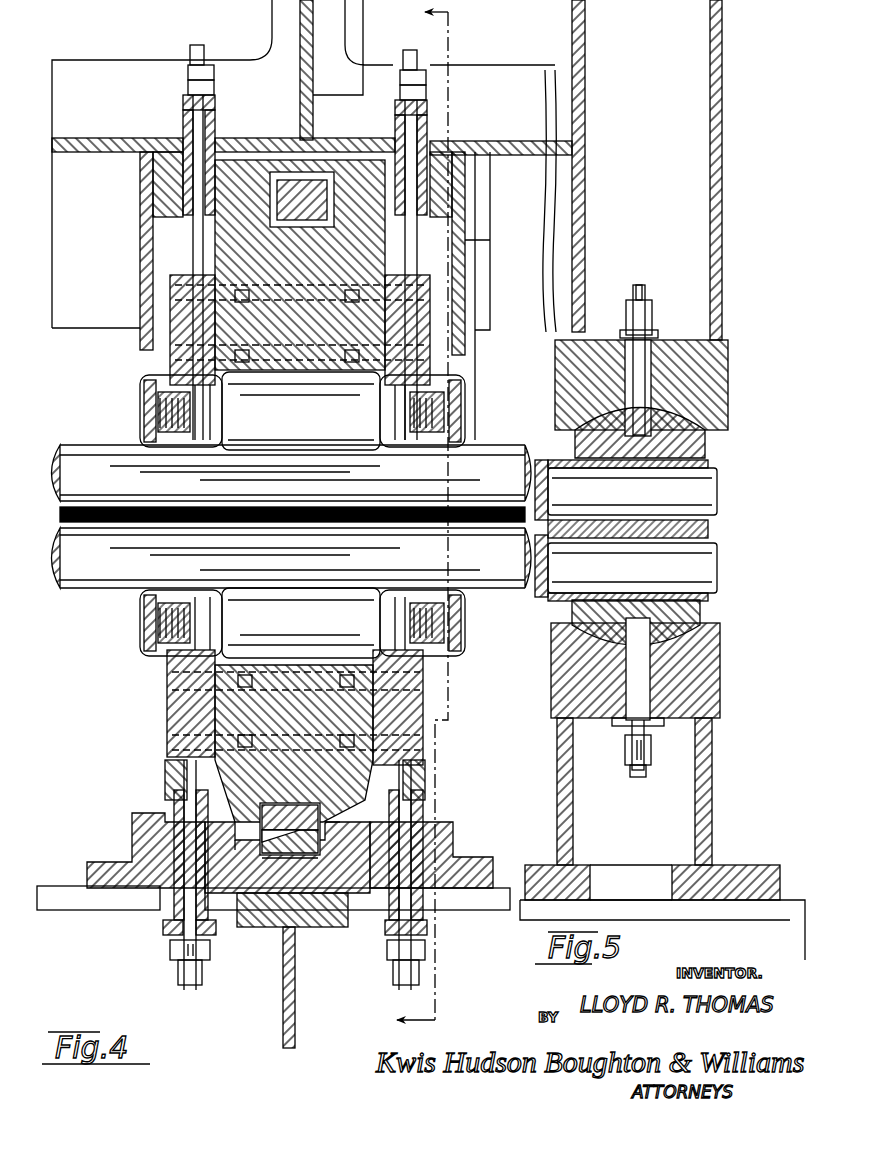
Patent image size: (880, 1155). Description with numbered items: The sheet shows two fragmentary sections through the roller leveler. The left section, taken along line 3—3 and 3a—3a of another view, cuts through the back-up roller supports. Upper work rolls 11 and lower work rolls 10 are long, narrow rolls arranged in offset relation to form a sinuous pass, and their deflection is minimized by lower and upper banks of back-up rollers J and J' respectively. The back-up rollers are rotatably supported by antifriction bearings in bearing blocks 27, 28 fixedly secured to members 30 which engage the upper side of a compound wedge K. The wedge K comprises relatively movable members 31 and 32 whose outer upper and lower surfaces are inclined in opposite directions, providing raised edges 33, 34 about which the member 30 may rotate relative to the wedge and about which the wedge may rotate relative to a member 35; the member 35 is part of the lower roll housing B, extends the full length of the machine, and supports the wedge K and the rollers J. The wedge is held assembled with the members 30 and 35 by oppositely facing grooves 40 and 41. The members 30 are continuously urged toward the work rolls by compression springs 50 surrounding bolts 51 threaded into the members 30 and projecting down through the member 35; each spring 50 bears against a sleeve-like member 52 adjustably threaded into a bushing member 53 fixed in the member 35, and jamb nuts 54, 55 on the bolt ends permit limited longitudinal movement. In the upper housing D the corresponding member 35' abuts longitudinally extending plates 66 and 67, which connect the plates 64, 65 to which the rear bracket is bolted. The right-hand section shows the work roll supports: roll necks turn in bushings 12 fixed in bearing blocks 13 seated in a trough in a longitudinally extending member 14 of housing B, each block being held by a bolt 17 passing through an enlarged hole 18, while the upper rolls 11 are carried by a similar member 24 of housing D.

In FIG. 4, the upper roll housing D is at (123, 72).
In FIG. 5, the upper roll housing D is at (720, 192).
In FIG. 4, the plate 64 is at (72, 315).
In FIG. 4, the member 35' is at (312, 130).
In FIG. 4, the longitudinally extending plate 66 is at (143, 245).
In FIG. 4, the longitudinally extending plate 67 is at (470, 252).
In FIG. 4, the plate 65 is at (498, 328).
In FIG. 4, the upper bank of back-up rollers J' is at (301, 430).
In FIG. 4, the lower bank of back-up rollers J is at (301, 600).
In FIG. 4, the upper work rolls 11 is at (93, 452).
In FIG. 5, the upper work rolls 11 is at (715, 492).
In FIG. 4, the lower work rolls 10 is at (95, 572).
In FIG. 5, the lower work rolls 10 is at (715, 560).
In FIG. 4, the bearing block 27 is at (165, 707).
In FIG. 4, the bearing block 28 is at (420, 712).
In FIG. 4, the member 30 is at (300, 746).
In FIG. 4, the compound wedge K is at (287, 857).
In FIG. 4, the raised edge 33 is at (282, 804).
In FIG. 4, the upper wedge member 31 is at (300, 812).
In FIG. 4, the groove 41 is at (325, 842).
In FIG. 4, the groove 40 is at (330, 806).
In FIG. 4, the raised edge 34 is at (290, 871).
In FIG. 4, the lower wedge member 32 is at (308, 852).
In FIG. 4, the member 35 is at (290, 850).
In FIG. 4, the bushing member 53 is at (140, 860).
In FIG. 4, the section line 3 is at (316, 955).
In FIG. 4, the compression spring 50 is at (165, 805).
In FIG. 4, the bolt 51 is at (165, 925).
In FIG. 4, the sleeve-like member 52 is at (205, 925).
In FIG. 4, the jamb nut 54 is at (170, 947).
In FIG. 4, the jamb nut 55 is at (178, 963).
In FIG. 4, the section line 3a is at (435, 515).
In FIG. 5, the longitudinally extending member 24 is at (735, 362).
In FIG. 5, the bolt 17 is at (652, 392).
In FIG. 5, the bushing 12 is at (618, 592).
In FIG. 5, the lower bearing block 13 is at (705, 618).
In FIG. 5, the longitudinally extending member 14 is at (718, 694).
In FIG. 5, the enlarged hole 18 is at (652, 684).
In FIG. 5, the lower roll housing B is at (712, 790).